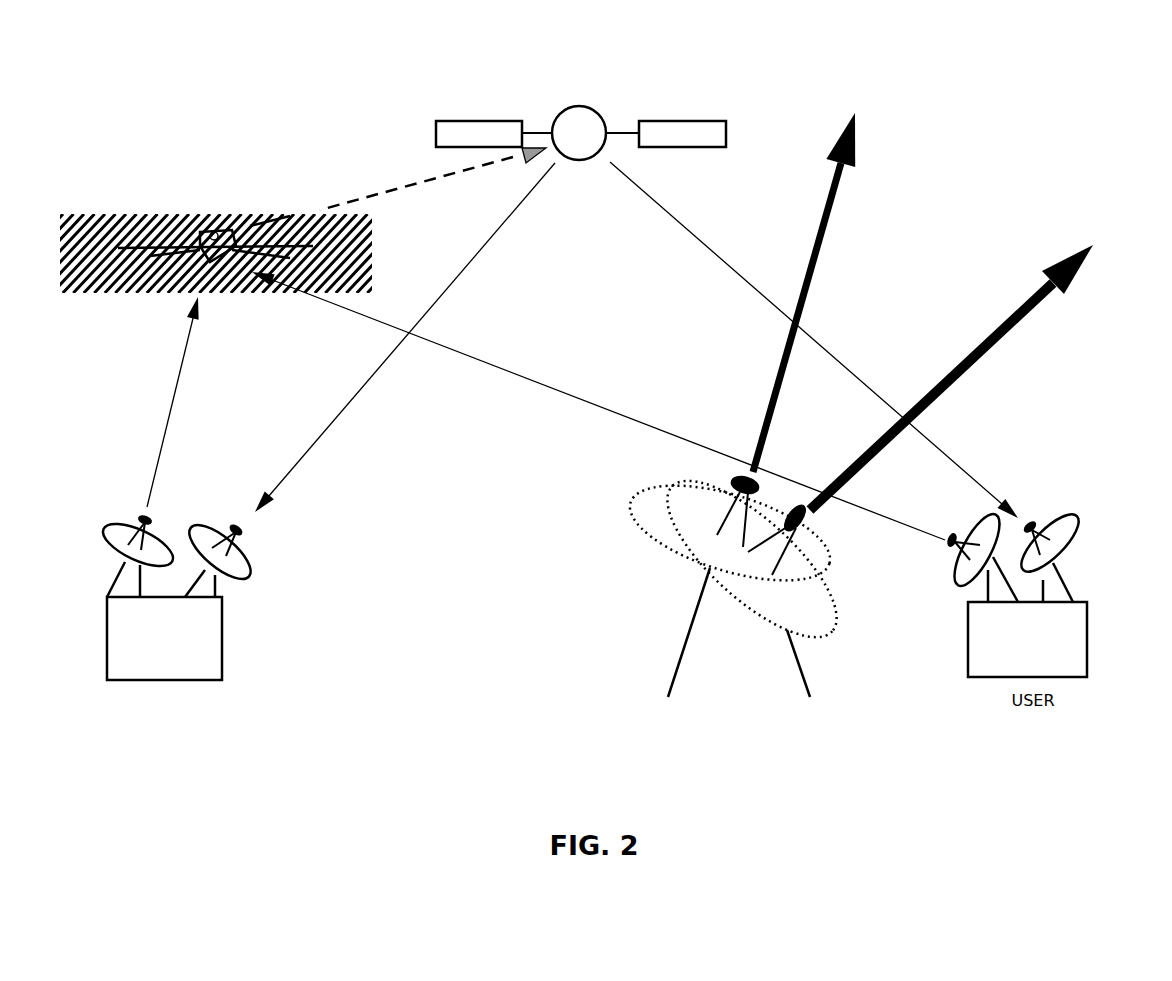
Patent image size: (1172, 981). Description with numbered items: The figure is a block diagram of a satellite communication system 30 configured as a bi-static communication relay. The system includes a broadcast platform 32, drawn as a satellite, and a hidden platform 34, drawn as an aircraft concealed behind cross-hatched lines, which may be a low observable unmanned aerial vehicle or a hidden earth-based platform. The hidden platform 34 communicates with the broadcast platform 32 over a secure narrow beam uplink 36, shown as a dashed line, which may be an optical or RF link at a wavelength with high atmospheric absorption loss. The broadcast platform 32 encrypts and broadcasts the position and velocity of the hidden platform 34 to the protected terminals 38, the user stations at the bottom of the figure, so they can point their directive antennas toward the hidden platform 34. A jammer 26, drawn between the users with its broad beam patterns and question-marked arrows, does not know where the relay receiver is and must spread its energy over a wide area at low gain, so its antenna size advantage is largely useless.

The jammer 26 is at (643, 574).
The SATCOM system 30 is at (1020, 110).
The broadcast platform 32 is at (600, 93).
The hidden platform 34 is at (234, 191).
The secure narrow beam uplink 36 is at (393, 183).
The protected terminals 38 is at (135, 729).